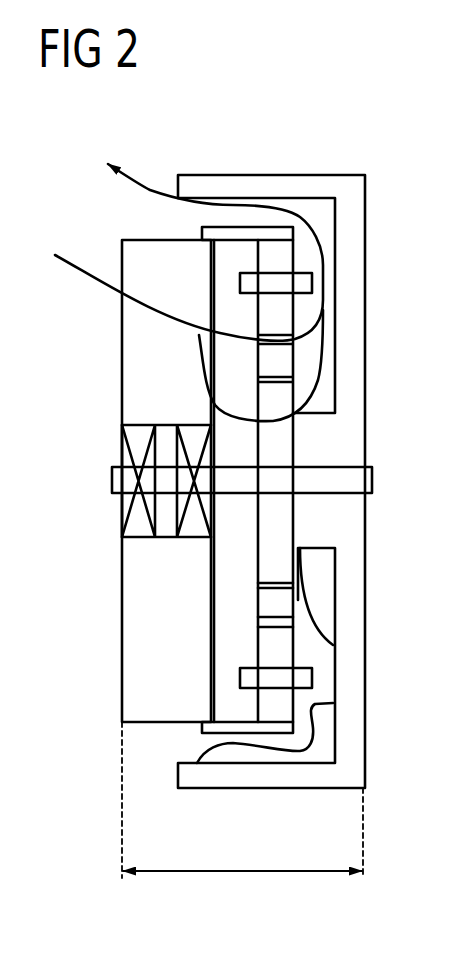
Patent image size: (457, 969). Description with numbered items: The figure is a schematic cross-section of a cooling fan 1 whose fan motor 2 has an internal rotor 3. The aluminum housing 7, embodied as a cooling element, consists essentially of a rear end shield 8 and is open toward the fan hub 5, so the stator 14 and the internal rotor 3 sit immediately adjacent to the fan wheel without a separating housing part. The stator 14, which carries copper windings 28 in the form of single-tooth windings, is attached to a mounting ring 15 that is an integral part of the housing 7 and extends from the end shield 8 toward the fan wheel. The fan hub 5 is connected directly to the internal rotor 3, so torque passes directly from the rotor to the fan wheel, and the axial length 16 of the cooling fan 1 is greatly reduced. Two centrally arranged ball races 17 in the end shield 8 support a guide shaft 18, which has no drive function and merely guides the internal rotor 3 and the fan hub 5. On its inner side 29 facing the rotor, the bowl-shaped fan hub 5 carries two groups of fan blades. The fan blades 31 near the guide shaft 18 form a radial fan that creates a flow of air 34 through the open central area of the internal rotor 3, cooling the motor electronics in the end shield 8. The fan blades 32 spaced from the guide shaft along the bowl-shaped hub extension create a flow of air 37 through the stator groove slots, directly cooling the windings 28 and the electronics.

The cooling fan 1 is at (350, 130).
The fan motor 2 is at (240, 563).
The internal rotor 3 is at (280, 446).
The fan hub 5 is at (348, 258).
The housing 7 is at (120, 693).
The end shield 8 is at (137, 342).
The stator 14 is at (273, 652).
The mounting ring 15 is at (203, 236).
The axial length 16 is at (240, 868).
The ball races 17 is at (195, 433).
The guide shaft 18 is at (353, 486).
The copper windings 28 is at (304, 678).
The inner side 29 is at (335, 221).
The fan blades 31 is at (320, 592).
The fan blades 32 is at (323, 750).
The flow of air 34 is at (198, 326).
The flow of air 37 is at (322, 365).